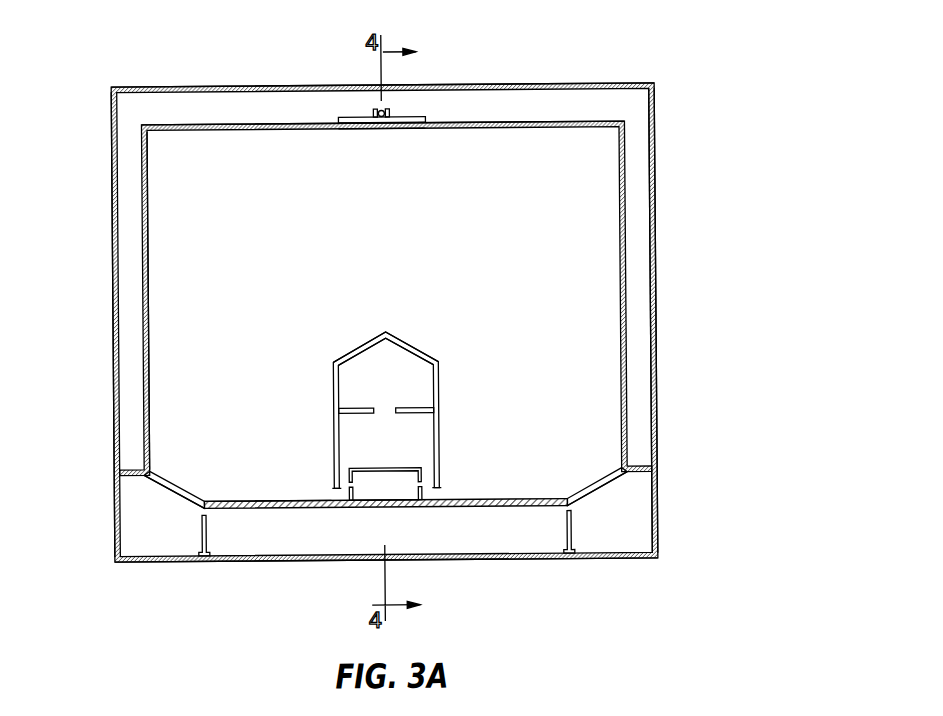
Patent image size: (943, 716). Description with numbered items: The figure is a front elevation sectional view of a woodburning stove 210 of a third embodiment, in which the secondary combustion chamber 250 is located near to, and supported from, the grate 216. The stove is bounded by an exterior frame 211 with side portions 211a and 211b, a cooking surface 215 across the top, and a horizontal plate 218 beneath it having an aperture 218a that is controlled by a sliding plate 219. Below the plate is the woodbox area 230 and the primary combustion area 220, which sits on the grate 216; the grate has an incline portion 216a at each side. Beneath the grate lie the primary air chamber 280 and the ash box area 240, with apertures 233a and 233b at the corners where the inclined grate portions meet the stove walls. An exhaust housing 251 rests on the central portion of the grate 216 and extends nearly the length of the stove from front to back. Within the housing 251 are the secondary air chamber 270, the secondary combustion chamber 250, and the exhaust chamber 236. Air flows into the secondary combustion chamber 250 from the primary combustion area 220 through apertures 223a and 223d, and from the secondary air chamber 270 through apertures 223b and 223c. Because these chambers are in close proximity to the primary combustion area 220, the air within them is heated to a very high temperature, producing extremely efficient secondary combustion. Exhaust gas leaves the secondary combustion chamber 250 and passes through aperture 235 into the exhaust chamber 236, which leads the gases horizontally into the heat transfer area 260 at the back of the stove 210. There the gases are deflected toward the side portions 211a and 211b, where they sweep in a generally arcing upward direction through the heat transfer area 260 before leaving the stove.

The stove 210 is at (684, 170).
The exterior frame 211 is at (658, 377).
The side portion 211a is at (658, 292).
The side portion 211b is at (112, 344).
The cooking surface 215 is at (215, 86).
The grate 216 is at (500, 499).
The grate incline portion 216a is at (180, 490).
The horizontal plate 218 is at (203, 130).
The aperture 218a is at (385, 130).
The sliding plate 219 is at (402, 117).
The primary combustion area 220 is at (250, 477).
The aperture 223a is at (328, 492).
The aperture 223b is at (352, 482).
The aperture 223c is at (418, 482).
The aperture 223d is at (437, 493).
The woodbox area 230 is at (200, 246).
The aperture 233a is at (200, 513).
The aperture 233b is at (572, 510).
The aperture 235 is at (385, 408).
The exhaust chamber 236 is at (396, 367).
The ash box area 240 is at (397, 540).
The secondary combustion chamber 250 is at (422, 425).
The exhaust housing 251 is at (357, 346).
The heat transfer area 260 is at (530, 103).
The secondary air chamber 270 is at (375, 488).
The primary air chamber 280 is at (133, 538).